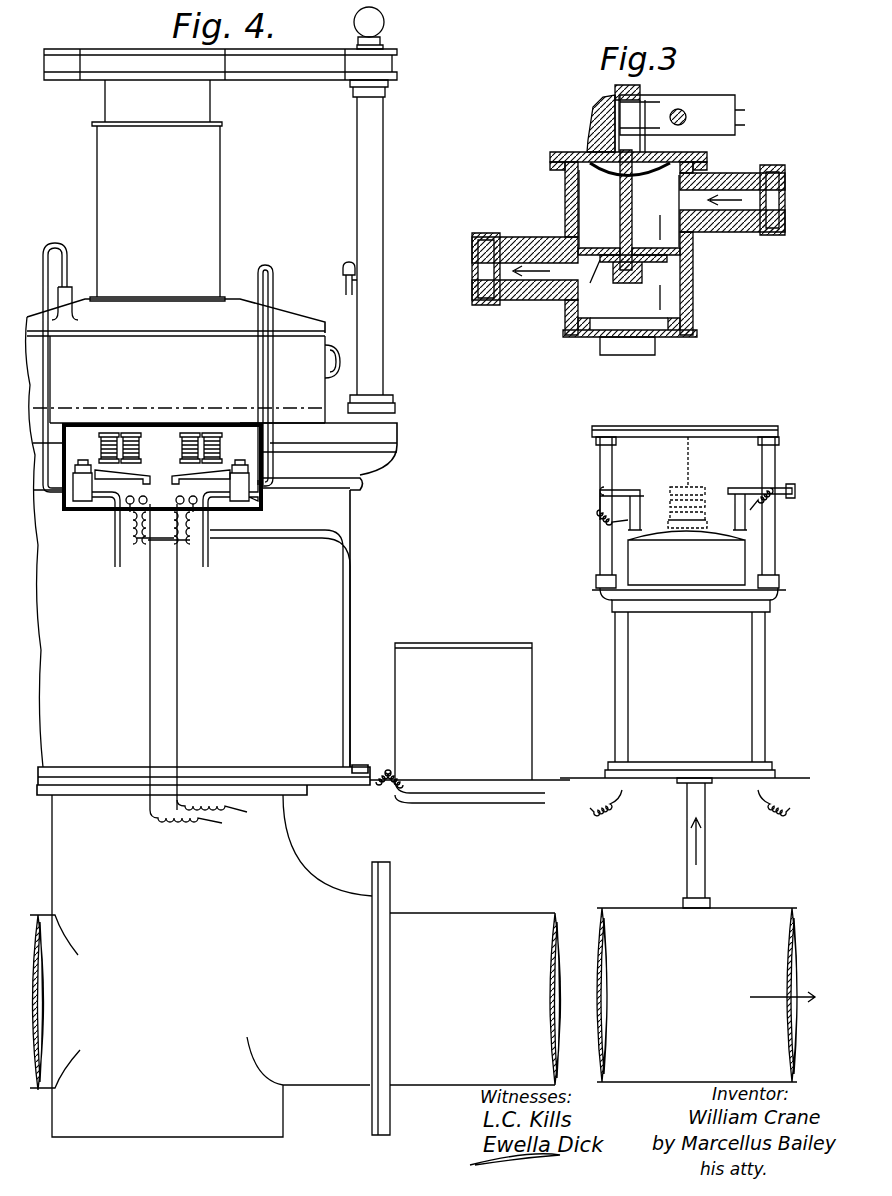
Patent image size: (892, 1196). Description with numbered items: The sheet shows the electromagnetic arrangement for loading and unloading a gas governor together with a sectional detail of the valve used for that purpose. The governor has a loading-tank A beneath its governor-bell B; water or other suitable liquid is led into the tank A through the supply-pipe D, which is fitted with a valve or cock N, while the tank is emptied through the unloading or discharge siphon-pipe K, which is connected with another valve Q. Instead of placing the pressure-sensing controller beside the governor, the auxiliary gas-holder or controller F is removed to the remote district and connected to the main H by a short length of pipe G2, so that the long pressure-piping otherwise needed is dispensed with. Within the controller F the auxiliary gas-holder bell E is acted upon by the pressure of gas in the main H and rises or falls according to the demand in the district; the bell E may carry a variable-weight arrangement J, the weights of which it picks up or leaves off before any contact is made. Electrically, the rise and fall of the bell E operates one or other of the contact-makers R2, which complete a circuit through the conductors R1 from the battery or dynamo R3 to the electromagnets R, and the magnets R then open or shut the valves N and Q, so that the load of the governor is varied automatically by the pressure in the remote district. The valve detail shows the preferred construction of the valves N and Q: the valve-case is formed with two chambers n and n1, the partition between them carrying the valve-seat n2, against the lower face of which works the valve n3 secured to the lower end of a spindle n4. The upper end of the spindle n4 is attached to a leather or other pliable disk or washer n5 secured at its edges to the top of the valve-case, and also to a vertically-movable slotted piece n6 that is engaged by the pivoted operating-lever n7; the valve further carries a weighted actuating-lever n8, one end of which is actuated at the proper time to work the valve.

In FIG. 4, the loading-tank A is at (176, 317).
In FIG. 4, the governor-bell B is at (179, 379).
In FIG. 4, the supply-pipe D is at (52, 368).
In FIG. 4, the unloading or discharge siphon-pipe K is at (275, 382).
In FIG. 4, the electromagnets R is at (180, 450).
In FIG. 4, the valve or cock N is at (85, 493).
In FIG. 3, the valve or cock N is at (576, 203).
In FIG. 4, the valve Q is at (258, 497).
In FIG. 4, the conductors R1 is at (740, 712).
In FIG. 4, the battery or dynamo R3 is at (470, 715).
In FIG. 4, the main H is at (602, 996).
In FIG. 4, the short length of pipe G2 is at (690, 848).
In FIG. 4, the auxiliary gas-holder or controller F is at (685, 702).
In FIG. 4, the auxiliary gas-holder bell E is at (720, 562).
In FIG. 4, the variable weights J is at (688, 518).
In FIG. 4, the contact-makers R2 is at (740, 486).
In FIG. 3, the valve chamber n is at (655, 225).
In FIG. 3, the valve chamber n1 is at (655, 297).
In FIG. 3, the valve-seat n2 is at (610, 250).
In FIG. 3, the valve n3 is at (599, 283).
In FIG. 3, the spindle n4 is at (592, 208).
In FIG. 3, the leather or other pliable disk or washer n5 is at (662, 210).
In FIG. 3, the vertically-movable slotted piece n6 is at (612, 93).
In FIG. 3, the pivoted operating-lever n7 is at (677, 115).
In FIG. 3, the weighted actuating-lever n8 is at (749, 117).